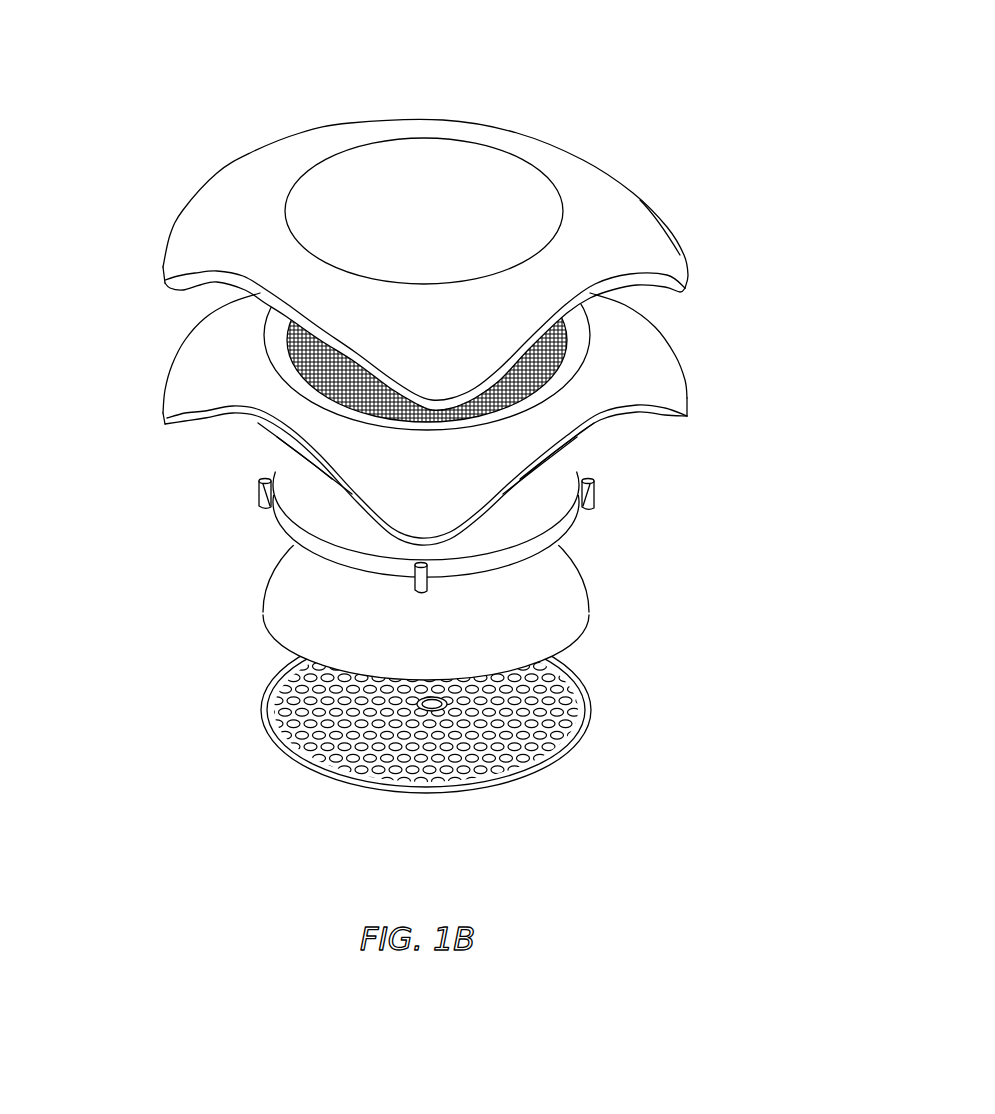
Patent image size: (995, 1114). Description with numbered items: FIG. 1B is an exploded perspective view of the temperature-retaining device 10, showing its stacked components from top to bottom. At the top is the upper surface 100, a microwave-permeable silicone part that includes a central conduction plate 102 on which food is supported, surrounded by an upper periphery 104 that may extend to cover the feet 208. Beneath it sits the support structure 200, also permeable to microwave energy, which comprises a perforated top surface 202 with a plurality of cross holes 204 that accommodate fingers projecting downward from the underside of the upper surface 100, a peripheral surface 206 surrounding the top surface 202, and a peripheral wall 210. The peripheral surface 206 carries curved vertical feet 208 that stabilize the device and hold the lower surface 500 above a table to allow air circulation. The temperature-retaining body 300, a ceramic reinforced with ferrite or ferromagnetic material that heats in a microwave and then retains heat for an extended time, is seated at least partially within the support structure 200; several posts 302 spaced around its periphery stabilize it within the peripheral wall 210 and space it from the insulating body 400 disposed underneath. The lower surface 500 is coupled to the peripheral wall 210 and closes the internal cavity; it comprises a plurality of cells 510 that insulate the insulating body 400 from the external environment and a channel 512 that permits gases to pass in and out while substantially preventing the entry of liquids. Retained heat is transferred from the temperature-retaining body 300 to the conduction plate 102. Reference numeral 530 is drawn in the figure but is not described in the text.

The temperature-retaining device 10 is at (568, 104).
The upper surface 100 is at (147, 240).
The conduction plate 102 is at (400, 154).
The upper periphery 104 is at (660, 245).
The support structure 200 is at (153, 364).
The perforated top surface 202 is at (578, 363).
The cross holes 204 is at (568, 345).
The peripheral surface 206 is at (260, 390).
The feet 208 is at (680, 397).
The peripheral wall 210 is at (283, 441).
The temperature-retaining body 300 is at (297, 507).
The posts 302 is at (590, 492).
The insulating body 400 is at (572, 597).
The lower surface 500 is at (601, 741).
The cells 510 is at (362, 722).
The channel 512 is at (437, 704).
The perforations 530 is at (358, 720).